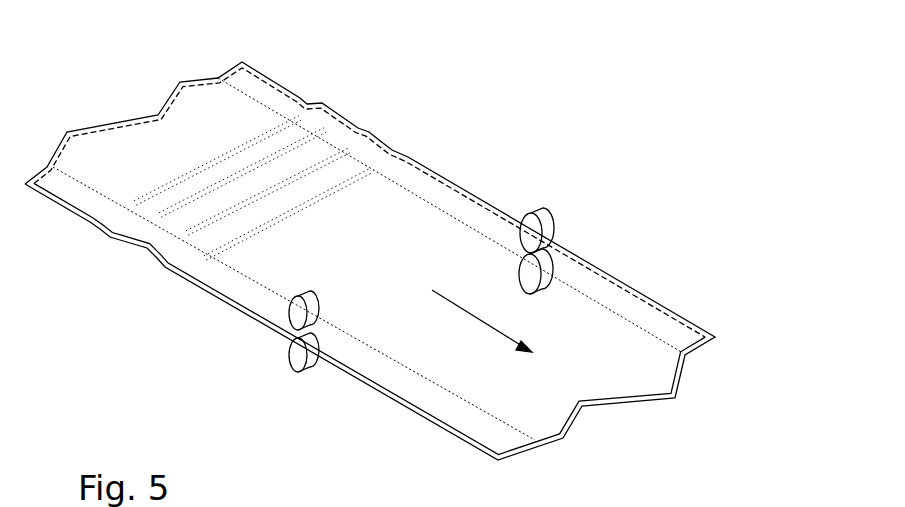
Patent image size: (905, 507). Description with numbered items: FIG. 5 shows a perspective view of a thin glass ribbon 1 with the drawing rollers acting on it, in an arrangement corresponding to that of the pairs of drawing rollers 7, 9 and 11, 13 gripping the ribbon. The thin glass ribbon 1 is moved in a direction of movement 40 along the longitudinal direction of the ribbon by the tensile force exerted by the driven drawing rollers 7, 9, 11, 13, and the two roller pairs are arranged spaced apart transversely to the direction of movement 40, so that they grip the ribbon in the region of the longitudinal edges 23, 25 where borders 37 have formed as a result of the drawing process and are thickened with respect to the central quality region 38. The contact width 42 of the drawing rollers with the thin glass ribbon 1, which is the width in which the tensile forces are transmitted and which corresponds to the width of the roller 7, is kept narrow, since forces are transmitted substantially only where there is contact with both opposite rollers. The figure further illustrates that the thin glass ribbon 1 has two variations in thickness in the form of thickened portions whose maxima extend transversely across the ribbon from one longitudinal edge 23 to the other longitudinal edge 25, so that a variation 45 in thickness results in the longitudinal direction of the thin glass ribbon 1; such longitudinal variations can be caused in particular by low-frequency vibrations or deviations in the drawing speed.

The thin glass ribbon 1 is at (430, 152).
The borders 37 is at (280, 93).
The variation in thickness 45 is at (368, 131).
The quality region 38 is at (402, 220).
The longitudinal edge 25 is at (453, 182).
The longitudinal edge 23 is at (183, 283).
The contact width 42 is at (300, 294).
The drawing roller 7 is at (290, 310).
The drawing roller 9 is at (290, 355).
The drawing roller 11 is at (553, 222).
The drawing roller 13 is at (545, 263).
The direction of movement 40 is at (453, 302).